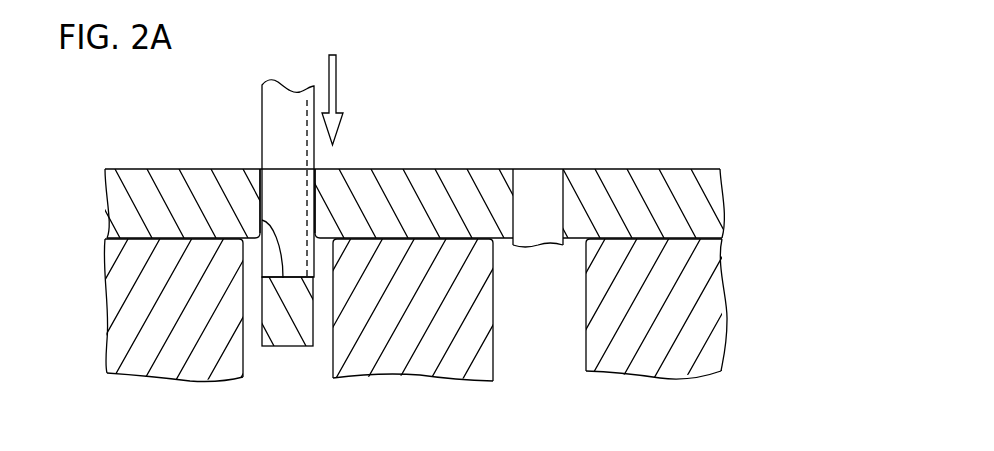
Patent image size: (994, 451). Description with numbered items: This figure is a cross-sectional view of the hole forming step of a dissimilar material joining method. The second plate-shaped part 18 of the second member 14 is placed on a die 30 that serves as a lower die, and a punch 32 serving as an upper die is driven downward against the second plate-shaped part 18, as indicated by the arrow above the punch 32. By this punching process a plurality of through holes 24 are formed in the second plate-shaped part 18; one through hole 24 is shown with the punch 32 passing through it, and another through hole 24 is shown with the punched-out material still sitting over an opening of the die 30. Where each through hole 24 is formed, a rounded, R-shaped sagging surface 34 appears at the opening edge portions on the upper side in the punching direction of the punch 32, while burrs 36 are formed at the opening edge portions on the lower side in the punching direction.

The second member 14 is at (95, 185).
The second plate-shaped part 18 is at (708, 185).
The through hole 24 is at (288, 346).
The die 30 is at (170, 368).
The punch 32 is at (274, 115).
The sagging surface 34 is at (307, 168).
The burr 36 is at (259, 246).